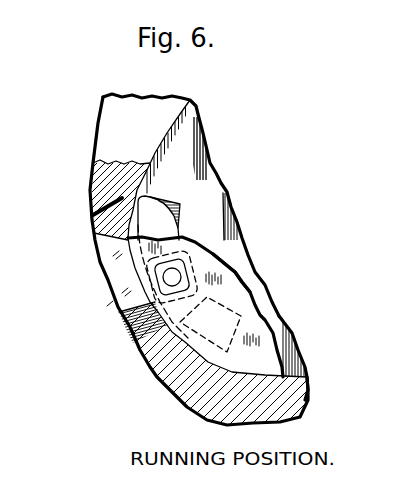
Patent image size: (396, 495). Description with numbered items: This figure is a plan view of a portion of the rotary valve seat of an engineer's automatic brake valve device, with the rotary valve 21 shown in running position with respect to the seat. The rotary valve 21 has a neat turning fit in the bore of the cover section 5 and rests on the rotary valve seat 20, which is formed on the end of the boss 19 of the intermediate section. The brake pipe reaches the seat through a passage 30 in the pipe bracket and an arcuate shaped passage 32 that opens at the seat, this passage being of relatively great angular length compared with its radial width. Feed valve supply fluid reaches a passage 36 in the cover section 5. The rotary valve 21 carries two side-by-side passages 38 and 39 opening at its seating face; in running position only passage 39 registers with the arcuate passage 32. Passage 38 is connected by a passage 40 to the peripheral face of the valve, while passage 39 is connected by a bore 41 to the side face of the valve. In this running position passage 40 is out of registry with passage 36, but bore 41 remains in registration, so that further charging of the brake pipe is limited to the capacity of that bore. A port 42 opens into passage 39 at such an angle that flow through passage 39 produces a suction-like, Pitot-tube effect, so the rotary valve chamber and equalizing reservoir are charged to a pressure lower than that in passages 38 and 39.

The cover section 5 is at (190, 390).
The boss 19 is at (299, 353).
The rotary valve seat 20 is at (286, 332).
The rotary valve 21 is at (203, 257).
The passage 30 is at (212, 216).
The arcuate shaped passage 32 is at (217, 201).
The passage 36 is at (110, 288).
The passage 38 is at (243, 315).
The passage 39 is at (232, 263).
The passage 40 is at (142, 363).
The bore 41 is at (140, 292).
The port 42 is at (163, 273).